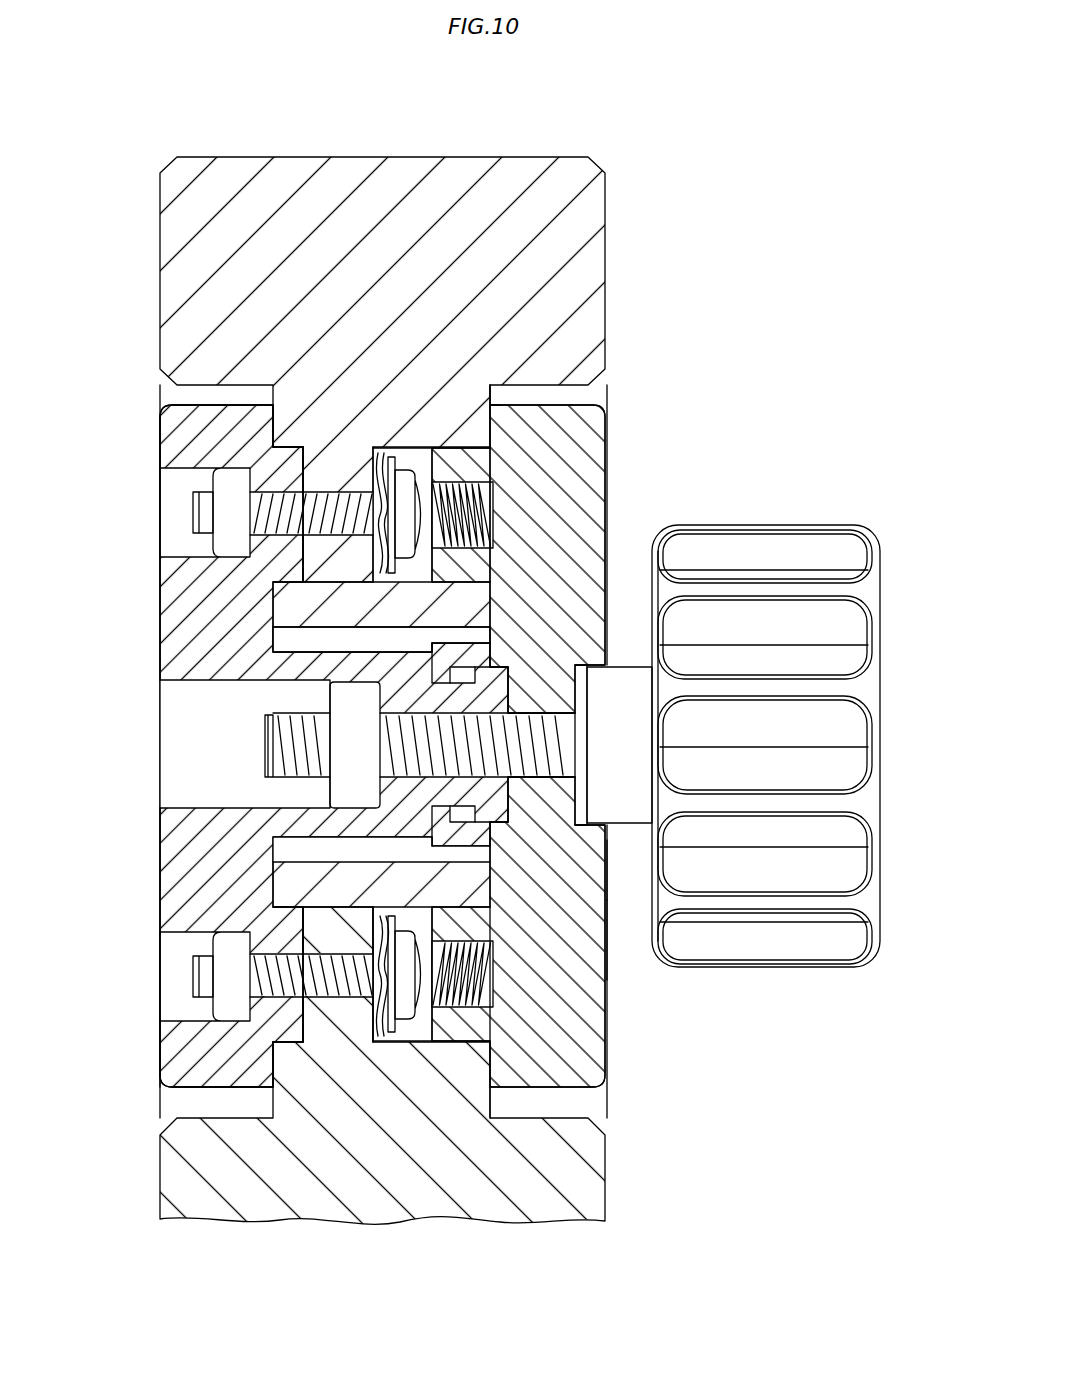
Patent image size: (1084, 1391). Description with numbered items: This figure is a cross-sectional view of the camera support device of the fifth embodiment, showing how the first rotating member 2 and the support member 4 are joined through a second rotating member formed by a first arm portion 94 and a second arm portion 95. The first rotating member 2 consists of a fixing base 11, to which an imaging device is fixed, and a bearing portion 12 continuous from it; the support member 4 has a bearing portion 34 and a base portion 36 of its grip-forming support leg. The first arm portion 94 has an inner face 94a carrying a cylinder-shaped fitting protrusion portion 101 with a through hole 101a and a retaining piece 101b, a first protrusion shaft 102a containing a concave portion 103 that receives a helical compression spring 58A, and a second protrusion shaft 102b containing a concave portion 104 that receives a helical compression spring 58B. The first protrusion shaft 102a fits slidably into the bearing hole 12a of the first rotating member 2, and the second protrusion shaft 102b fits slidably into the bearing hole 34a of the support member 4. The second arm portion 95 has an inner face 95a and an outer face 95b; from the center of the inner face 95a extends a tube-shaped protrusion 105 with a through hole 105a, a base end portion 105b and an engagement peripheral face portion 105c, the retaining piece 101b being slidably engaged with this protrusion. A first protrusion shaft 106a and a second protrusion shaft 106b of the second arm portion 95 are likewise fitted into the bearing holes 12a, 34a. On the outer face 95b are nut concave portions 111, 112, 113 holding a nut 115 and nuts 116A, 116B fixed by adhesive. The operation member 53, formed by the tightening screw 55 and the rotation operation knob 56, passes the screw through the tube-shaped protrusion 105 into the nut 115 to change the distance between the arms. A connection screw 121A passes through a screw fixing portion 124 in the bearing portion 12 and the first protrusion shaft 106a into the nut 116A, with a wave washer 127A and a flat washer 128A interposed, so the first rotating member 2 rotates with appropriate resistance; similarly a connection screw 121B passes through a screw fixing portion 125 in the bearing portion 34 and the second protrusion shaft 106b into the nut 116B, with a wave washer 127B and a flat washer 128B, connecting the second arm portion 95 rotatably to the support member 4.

The first rotating member 2 is at (583, 150).
The support member 4 is at (582, 1238).
The fixing base 11 is at (190, 233).
The bearing portion 12 is at (195, 437).
The bearing hole 12a is at (440, 450).
The bearing portion 34 is at (290, 1070).
The bearing hole 34a is at (455, 1043).
The base portion 36 is at (212, 1212).
The operation member 53 is at (806, 516).
The tightening screw 55 is at (280, 735).
The rotation operation knob 56 is at (882, 690).
The helical compression spring 58A is at (495, 484).
The helical compression spring 58B is at (494, 1005).
The first arm portion 94 is at (585, 430).
The inner face 94a is at (500, 392).
The second arm portion 95 is at (165, 862).
The inner face 95a is at (275, 578).
The outer face 95b is at (165, 820).
The fitting protrusion portion 101 is at (607, 572).
The through hole 101a is at (508, 860).
The retaining piece 101b is at (606, 950).
The first protrusion shaft 102a is at (472, 452).
The second protrusion shaft 102b is at (472, 1045).
The concave portion 103 is at (495, 455).
The concave portion 104 is at (494, 950).
The tube-shaped protrusion 105 is at (295, 852).
The through hole 105a is at (320, 642).
The base end portion 105b is at (460, 660).
The engagement peripheral face portion 105c is at (582, 695).
The first protrusion shaft 106a is at (310, 462).
The second protrusion shaft 106b is at (312, 1043).
The nut concave portion 111 is at (195, 688).
The nut concave portion 112 is at (165, 470).
The nut concave portion 113 is at (245, 1018).
The nut 115 is at (335, 792).
The nut 116A is at (225, 551).
The nut 116B is at (225, 946).
The connection screw 121A is at (200, 512).
The connection screw 121B is at (200, 975).
The screw fixing portion 124 is at (337, 462).
The screw fixing portion 125 is at (345, 1043).
The wave washer 127A is at (394, 458).
The wave washer 127B is at (393, 1035).
The flat washer 128A is at (381, 453).
The flat washer 128B is at (382, 1036).